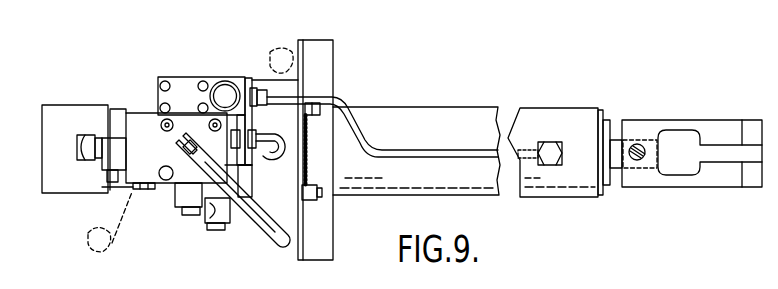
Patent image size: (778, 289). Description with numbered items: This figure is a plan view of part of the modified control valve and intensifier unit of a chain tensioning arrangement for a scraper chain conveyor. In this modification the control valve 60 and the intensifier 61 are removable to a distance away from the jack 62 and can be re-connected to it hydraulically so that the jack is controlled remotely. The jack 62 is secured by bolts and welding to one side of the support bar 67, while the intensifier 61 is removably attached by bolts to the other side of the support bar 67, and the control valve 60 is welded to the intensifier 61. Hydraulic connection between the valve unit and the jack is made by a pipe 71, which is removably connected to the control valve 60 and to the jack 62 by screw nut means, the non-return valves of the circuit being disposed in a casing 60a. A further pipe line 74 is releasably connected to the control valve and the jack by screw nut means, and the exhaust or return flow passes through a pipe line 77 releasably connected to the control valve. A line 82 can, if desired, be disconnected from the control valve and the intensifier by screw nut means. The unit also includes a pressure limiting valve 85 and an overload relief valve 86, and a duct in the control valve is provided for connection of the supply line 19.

The intensifier 61 is at (78, 113).
The control valve 60 is at (139, 122).
The supply line 19 is at (107, 188).
The overload relief valve 86 is at (217, 83).
The casing 60a is at (230, 121).
The pipe line 77 is at (238, 160).
The pipe line 74 is at (262, 146).
The pipe 71 is at (373, 150).
The jack 62 is at (425, 127).
The support bar 67 is at (273, 205).
The line 82 is at (214, 204).
The pressure limiting valve 85 is at (161, 190).